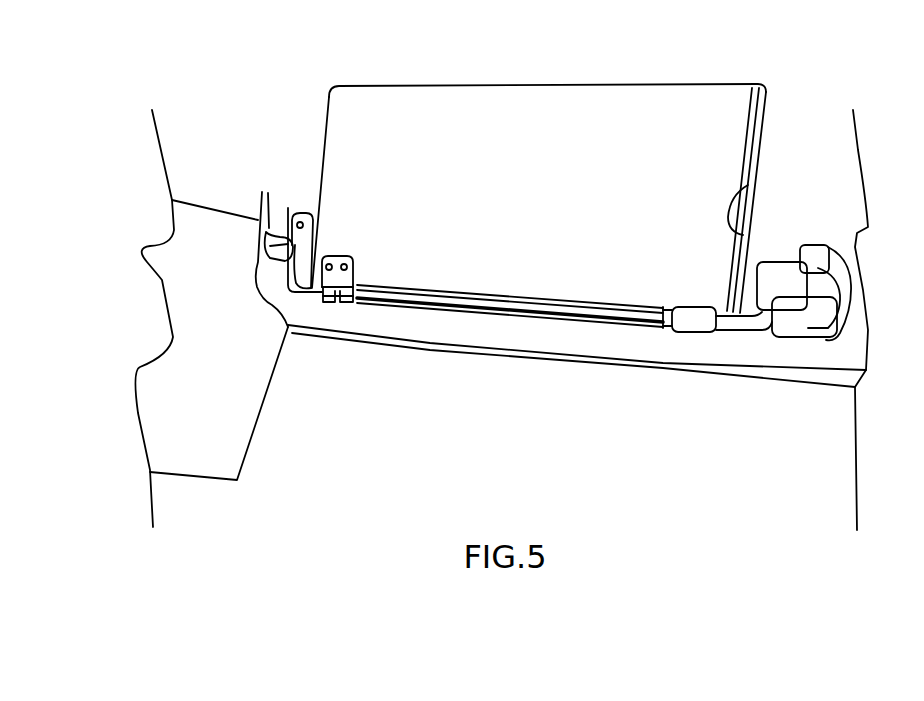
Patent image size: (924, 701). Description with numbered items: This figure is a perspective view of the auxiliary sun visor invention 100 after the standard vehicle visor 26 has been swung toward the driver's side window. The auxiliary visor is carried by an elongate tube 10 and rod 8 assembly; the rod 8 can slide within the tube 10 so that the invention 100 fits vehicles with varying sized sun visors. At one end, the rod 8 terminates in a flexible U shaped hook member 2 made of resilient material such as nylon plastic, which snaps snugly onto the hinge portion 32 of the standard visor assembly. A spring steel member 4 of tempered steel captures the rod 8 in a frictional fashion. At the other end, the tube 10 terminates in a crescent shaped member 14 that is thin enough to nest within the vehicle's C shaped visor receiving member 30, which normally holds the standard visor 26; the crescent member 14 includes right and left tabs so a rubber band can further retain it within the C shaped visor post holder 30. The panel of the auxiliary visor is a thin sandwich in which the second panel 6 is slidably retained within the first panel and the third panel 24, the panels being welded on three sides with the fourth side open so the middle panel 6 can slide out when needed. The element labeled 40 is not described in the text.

The invention 100 is at (440, 67).
The hook member 2 is at (288, 223).
The spring steel member 4 is at (350, 282).
The second panel 6 is at (738, 205).
The rod 8 is at (663, 323).
The elongate tube 10 is at (508, 313).
The crescent shaped member 14 is at (823, 286).
The third panel 24 is at (731, 141).
The standard vehicle visor 26 is at (247, 363).
The visor receiving member 30 is at (812, 247).
The hinge portion 32 is at (262, 198).
The latch housing 40 is at (850, 313).